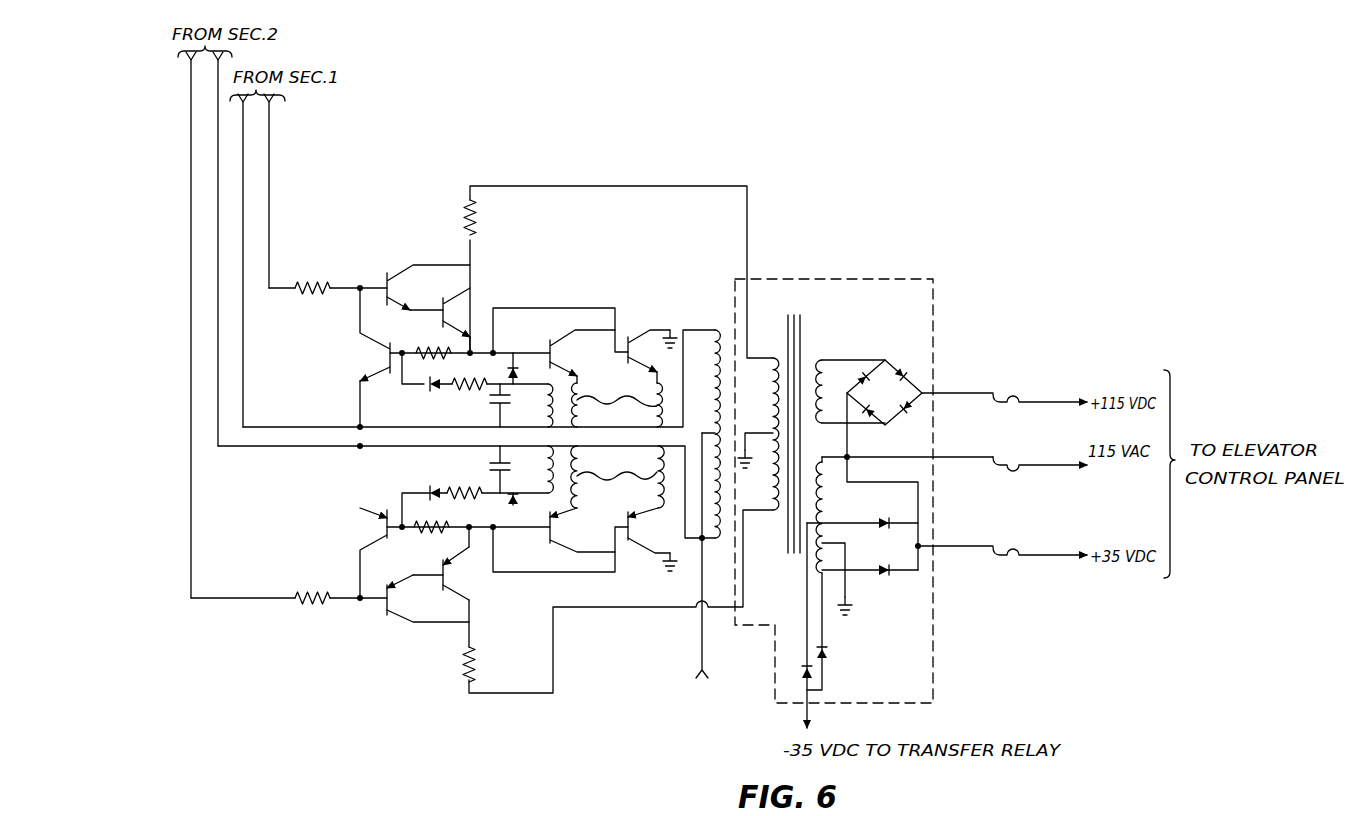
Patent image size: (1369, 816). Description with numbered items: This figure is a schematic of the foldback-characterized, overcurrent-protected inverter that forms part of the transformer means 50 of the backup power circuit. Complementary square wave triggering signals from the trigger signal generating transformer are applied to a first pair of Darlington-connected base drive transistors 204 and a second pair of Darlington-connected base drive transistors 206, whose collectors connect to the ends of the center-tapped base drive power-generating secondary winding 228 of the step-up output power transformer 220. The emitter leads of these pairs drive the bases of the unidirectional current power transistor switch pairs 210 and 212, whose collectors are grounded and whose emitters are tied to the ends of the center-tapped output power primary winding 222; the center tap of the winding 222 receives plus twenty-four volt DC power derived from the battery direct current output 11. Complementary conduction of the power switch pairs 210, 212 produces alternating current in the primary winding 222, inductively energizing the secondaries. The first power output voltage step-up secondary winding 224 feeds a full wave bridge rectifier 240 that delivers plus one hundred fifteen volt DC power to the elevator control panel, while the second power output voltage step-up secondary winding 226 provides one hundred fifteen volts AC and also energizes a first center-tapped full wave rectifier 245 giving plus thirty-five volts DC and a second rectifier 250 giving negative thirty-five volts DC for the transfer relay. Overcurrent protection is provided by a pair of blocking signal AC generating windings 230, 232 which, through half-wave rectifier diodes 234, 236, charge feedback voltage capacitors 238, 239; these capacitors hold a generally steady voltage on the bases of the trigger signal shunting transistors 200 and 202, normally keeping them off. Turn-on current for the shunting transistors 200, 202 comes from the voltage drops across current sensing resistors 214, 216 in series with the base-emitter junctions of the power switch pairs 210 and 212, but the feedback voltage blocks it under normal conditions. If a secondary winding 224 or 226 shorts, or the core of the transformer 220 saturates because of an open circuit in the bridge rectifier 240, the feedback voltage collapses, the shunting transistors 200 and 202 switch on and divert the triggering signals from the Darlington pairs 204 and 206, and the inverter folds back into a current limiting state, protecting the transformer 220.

The direct current output 11 is at (702, 650).
The transformer means 50 is at (810, 278).
The trigger signal shunting transistor 200 is at (392, 346).
The trigger signal shunting transistor 202 is at (392, 538).
The Darlington-connected base drive transistors 204 is at (432, 298).
The Darlington-connected base drive transistors 206 is at (438, 612).
The power transistor switch pair 210 is at (570, 374).
The power transistor switch pair 212 is at (566, 511).
The current sensing resistor 214 is at (617, 405).
The current sensing resistor 216 is at (617, 477).
The step-up output power transformer 220 is at (811, 311).
The center-tapped output power primary winding 222 is at (720, 330).
The first power output voltage step-up secondary winding 224 is at (811, 358).
The second power output voltage step-up secondary winding 226 is at (810, 463).
The base drive power-generating secondary winding 228 is at (774, 512).
The blocking signal AC generating winding 230 is at (532, 405).
The blocking signal AC generating winding 232 is at (532, 469).
The half-wave rectifier diode 234 is at (506, 382).
The half-wave rectifier diode 236 is at (512, 510).
The feedback voltage charging capacitor 238 is at (491, 395).
The feedback voltage charging capacitor 239 is at (490, 464).
The full wave bridge rectifier 240 is at (918, 354).
The first center-tapped full wave rectifier 245 is at (888, 560).
The rectifier means 250 is at (830, 644).